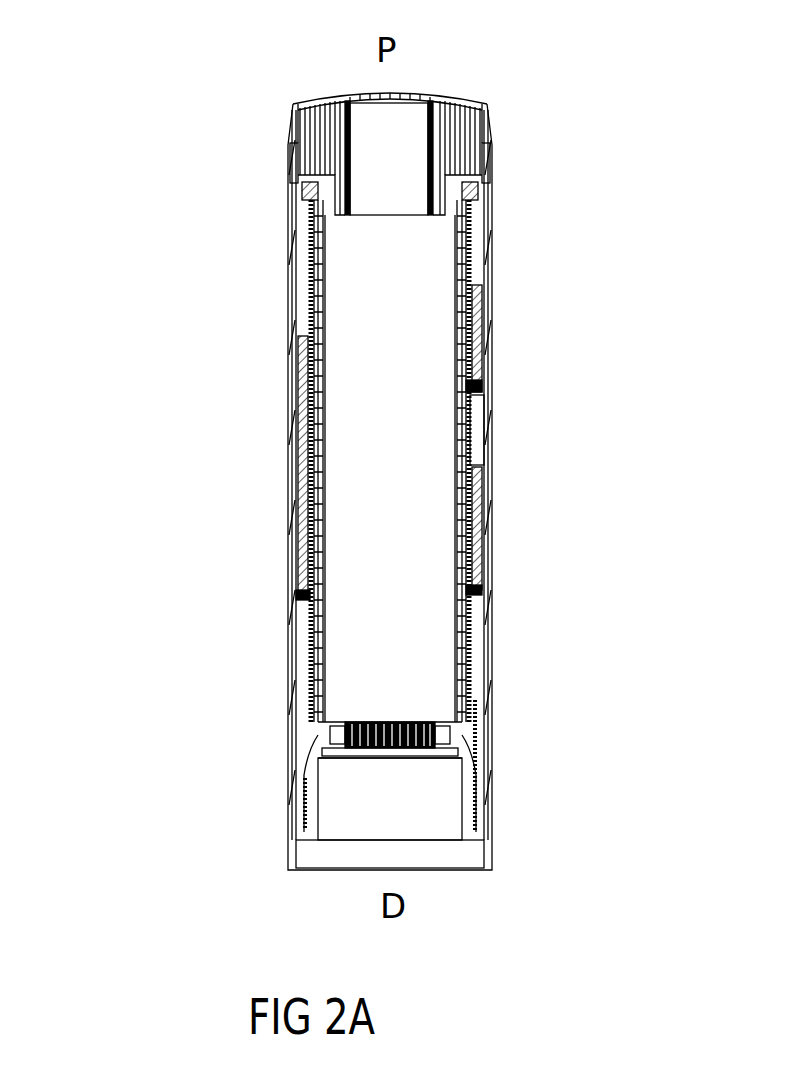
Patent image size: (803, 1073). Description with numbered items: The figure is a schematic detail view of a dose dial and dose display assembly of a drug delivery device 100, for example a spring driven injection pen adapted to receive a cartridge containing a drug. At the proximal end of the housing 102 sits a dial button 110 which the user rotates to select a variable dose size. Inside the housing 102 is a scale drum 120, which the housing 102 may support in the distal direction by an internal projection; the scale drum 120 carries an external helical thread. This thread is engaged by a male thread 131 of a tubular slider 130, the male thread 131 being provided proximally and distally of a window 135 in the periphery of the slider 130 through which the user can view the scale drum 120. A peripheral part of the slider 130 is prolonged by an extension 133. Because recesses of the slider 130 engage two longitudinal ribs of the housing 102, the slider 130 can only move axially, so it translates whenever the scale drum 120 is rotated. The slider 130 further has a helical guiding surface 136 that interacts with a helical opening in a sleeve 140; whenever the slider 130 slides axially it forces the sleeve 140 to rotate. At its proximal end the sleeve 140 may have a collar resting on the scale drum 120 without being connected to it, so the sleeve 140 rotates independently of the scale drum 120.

The drug delivery device 100 is at (172, 269).
The housing 102 is at (297, 777).
The dial button 110 is at (318, 104).
The scale drum 120 is at (318, 646).
The slider 130 is at (298, 461).
The male thread 131 is at (474, 386).
The extension 133 is at (484, 296).
The window 135 is at (478, 428).
The helical guiding surface 136 is at (481, 525).
The sleeve 140 is at (298, 587).